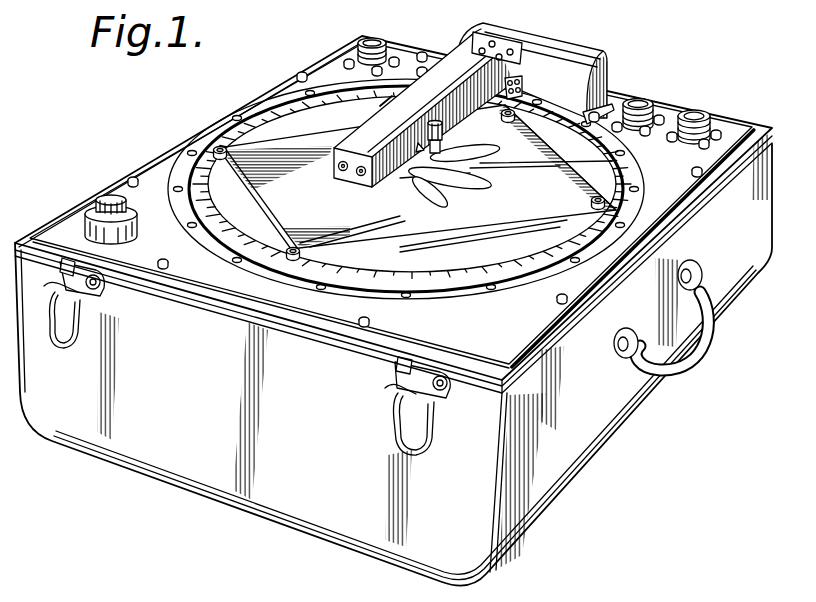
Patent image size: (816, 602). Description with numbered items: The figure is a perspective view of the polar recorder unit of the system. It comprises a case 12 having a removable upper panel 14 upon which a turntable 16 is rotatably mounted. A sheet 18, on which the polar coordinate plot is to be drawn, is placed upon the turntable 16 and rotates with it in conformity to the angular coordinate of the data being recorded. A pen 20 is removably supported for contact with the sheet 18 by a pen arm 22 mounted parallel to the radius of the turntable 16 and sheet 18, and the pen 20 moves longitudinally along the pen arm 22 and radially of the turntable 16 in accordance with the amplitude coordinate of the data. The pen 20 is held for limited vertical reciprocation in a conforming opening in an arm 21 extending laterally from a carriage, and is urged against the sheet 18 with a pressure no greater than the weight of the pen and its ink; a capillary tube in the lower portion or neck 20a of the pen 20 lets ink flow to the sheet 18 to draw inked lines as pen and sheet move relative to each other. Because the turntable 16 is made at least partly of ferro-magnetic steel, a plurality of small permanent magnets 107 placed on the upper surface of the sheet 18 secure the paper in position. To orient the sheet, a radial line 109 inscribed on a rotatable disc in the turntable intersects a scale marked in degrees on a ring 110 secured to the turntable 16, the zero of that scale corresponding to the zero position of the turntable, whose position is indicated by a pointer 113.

The case 12 is at (570, 478).
The removable upper panel 14 is at (491, 339).
The turntable 16 is at (190, 236).
The sheet 18 is at (308, 189).
The pen 20 is at (436, 123).
The neck 20a is at (441, 144).
The arm 21 is at (419, 151).
The pen arm 22 is at (383, 100).
The permanent magnets 107 is at (226, 146).
The radial line 109 is at (599, 160).
The ring 110 is at (241, 246).
The pointer 113 is at (525, 89).